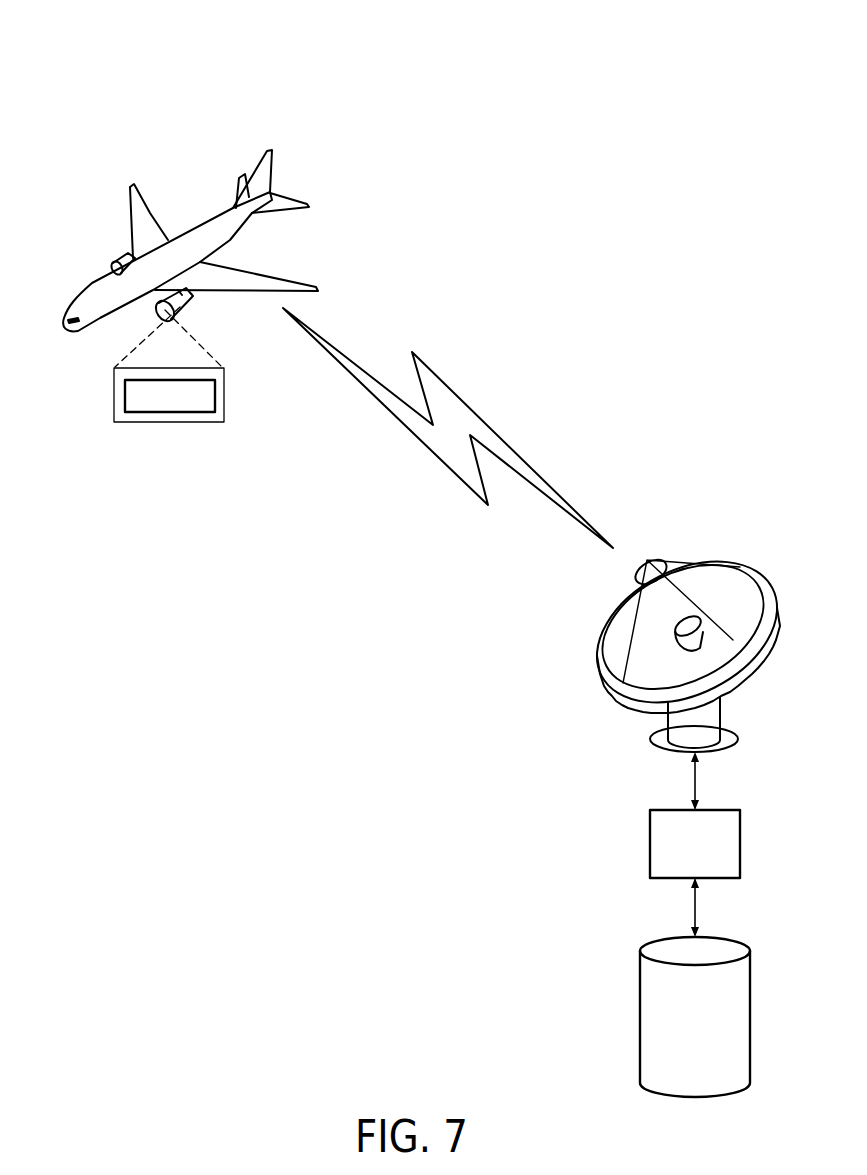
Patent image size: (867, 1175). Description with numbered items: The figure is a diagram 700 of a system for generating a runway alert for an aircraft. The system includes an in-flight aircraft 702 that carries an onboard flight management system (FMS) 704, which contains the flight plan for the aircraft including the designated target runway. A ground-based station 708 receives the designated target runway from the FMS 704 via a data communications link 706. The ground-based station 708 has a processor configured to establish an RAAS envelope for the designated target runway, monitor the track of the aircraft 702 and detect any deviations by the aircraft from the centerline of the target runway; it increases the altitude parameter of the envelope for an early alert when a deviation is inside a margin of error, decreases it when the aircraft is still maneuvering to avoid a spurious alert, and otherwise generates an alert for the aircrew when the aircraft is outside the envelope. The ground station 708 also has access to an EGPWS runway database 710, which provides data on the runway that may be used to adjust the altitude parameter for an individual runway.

The diagram 700 is at (120, 92).
The in-flight aircraft 702 is at (92, 286).
The flight management system (FMS) 704 is at (125, 394).
The data communications link 706 is at (597, 663).
The ground-based station 708 is at (650, 847).
The EGPWS runway database 710 is at (640, 1023).